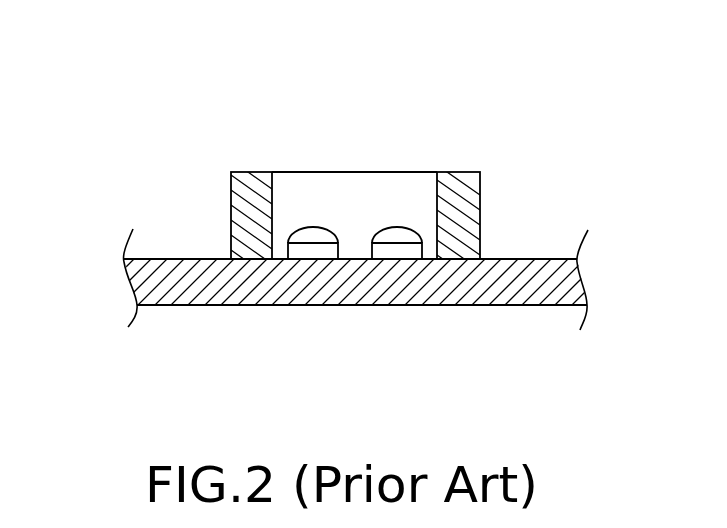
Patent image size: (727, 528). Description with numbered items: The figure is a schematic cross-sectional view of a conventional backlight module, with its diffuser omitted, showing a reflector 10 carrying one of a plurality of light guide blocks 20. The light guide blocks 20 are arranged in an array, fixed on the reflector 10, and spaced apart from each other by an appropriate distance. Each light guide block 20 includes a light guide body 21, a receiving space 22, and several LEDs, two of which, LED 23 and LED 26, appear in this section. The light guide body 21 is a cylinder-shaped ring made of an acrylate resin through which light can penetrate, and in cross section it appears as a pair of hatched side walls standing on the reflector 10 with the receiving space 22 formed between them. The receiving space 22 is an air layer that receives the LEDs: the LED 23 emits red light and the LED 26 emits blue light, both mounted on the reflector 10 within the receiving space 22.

The reflector 10 is at (534, 283).
The light guide block 20 is at (276, 180).
The light guide body 21 is at (455, 193).
The receiving space 22 is at (362, 190).
The LED 23 is at (313, 233).
The LED 26 is at (397, 233).